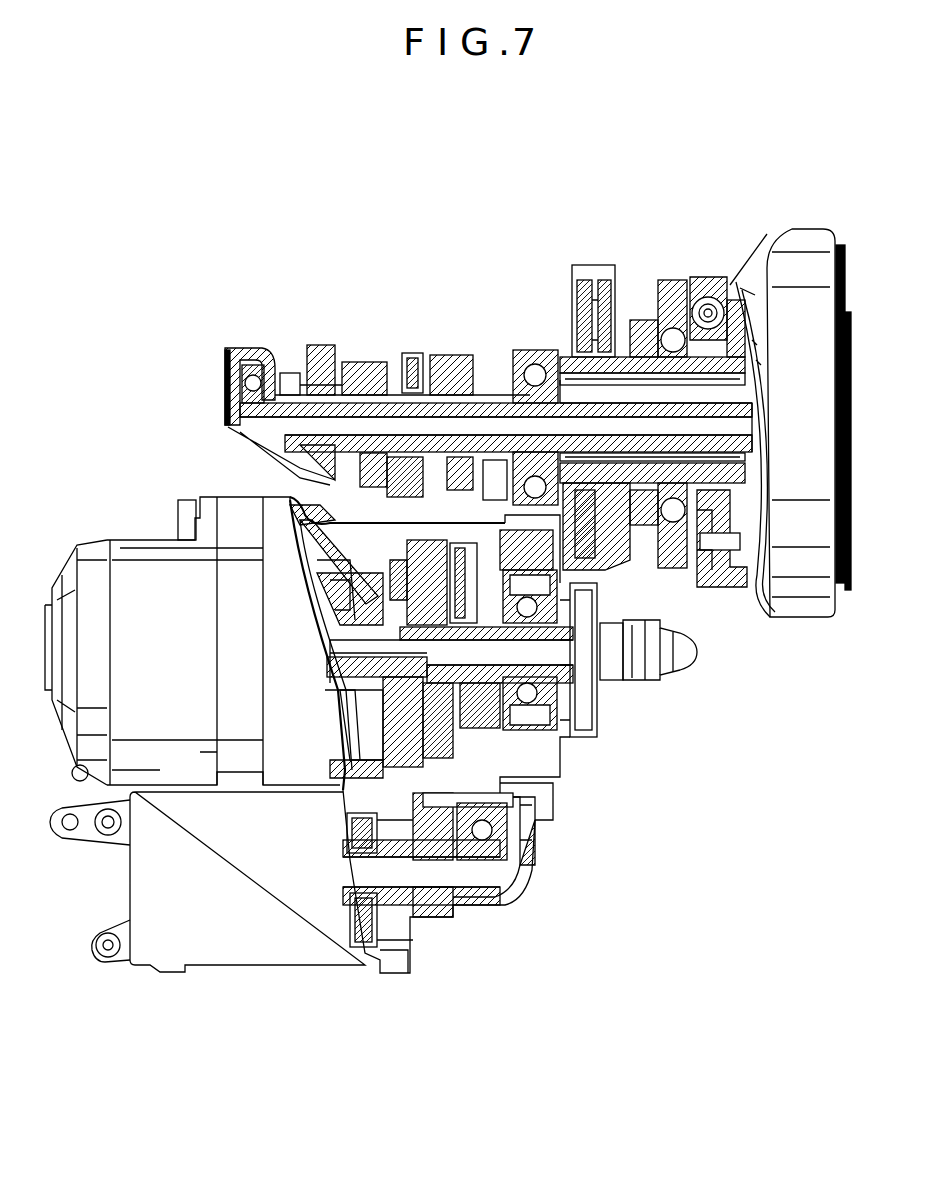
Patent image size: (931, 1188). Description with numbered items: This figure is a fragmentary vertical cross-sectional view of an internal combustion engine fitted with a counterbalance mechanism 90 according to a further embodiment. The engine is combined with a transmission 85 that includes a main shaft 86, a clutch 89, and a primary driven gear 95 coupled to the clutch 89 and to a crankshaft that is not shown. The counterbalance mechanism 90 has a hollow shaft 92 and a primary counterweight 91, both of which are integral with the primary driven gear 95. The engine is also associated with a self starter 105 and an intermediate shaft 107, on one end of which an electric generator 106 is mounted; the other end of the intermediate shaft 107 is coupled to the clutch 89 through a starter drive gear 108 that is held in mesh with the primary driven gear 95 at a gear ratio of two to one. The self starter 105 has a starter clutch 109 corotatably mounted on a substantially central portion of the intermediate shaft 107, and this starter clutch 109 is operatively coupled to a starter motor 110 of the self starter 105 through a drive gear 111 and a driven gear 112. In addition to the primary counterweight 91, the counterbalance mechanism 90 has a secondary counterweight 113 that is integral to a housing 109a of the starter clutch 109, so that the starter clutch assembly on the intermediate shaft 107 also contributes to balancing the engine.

The transmission 85 is at (300, 343).
The main shaft 86 is at (492, 400).
The clutch 89 is at (813, 225).
The counterbalance mechanism 90 is at (642, 565).
The primary counterweight 91 is at (566, 543).
The hollow shaft 92 is at (600, 575).
The primary driven gear 95 is at (600, 268).
The self starter 105 is at (535, 897).
The electric generator 106 is at (150, 518).
The intermediate shaft 107 is at (495, 710).
The starter drive gear 108 is at (600, 707).
The starter clutch 109 is at (376, 563).
The housing of the starter clutch 109a is at (400, 735).
The starter motor 110 is at (340, 966).
The drive gear 111 is at (525, 850).
The driven gear 112 is at (490, 532).
The secondary counterweight 113 is at (400, 760).